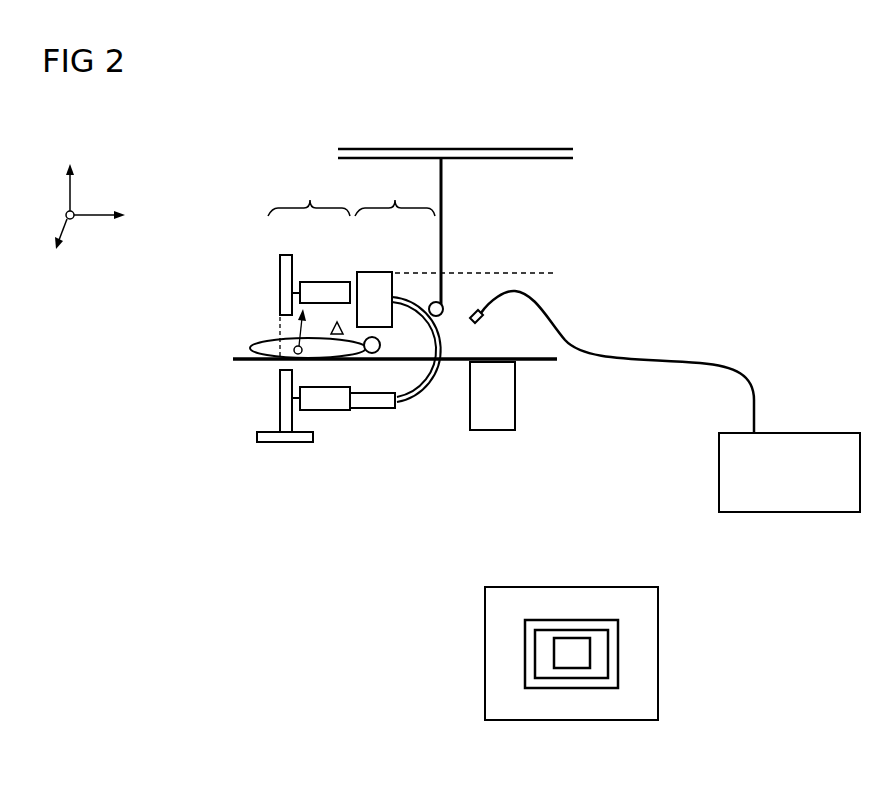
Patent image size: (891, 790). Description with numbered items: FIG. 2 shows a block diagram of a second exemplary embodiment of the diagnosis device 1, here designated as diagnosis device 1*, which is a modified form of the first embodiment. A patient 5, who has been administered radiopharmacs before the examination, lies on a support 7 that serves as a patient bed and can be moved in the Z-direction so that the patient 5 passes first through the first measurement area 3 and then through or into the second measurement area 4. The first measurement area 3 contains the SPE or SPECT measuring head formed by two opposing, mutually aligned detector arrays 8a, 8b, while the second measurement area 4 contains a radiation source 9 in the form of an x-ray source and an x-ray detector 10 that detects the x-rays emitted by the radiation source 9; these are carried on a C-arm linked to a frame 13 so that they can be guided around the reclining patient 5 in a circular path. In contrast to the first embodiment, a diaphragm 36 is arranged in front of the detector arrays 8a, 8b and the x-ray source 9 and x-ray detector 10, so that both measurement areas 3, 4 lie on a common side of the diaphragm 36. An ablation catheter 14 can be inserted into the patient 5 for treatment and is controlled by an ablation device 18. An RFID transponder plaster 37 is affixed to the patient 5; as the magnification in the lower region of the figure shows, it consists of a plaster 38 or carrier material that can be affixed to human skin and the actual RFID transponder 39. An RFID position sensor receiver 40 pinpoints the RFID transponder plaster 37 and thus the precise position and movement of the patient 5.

The diagnosis device 1 is at (602, 211).
The first measurement area 3 is at (309, 194).
The second measurement area 4 is at (395, 194).
The patient 5 is at (255, 345).
The support 7 is at (545, 363).
The detector array 8a is at (314, 282).
The detector array 8b is at (318, 412).
The radiation source 9 is at (370, 282).
The x-ray detector 10 is at (367, 410).
The frame 13 is at (523, 160).
The ablation catheter 14 is at (469, 304).
The ablation device 18 is at (803, 488).
The diaphragm 36 is at (280, 287).
The RFID transponder plaster 37 is at (334, 322).
The plaster 38 is at (642, 607).
The RFID transponder 39 is at (573, 652).
The RFID position sensor receiver 40 is at (66, 215).